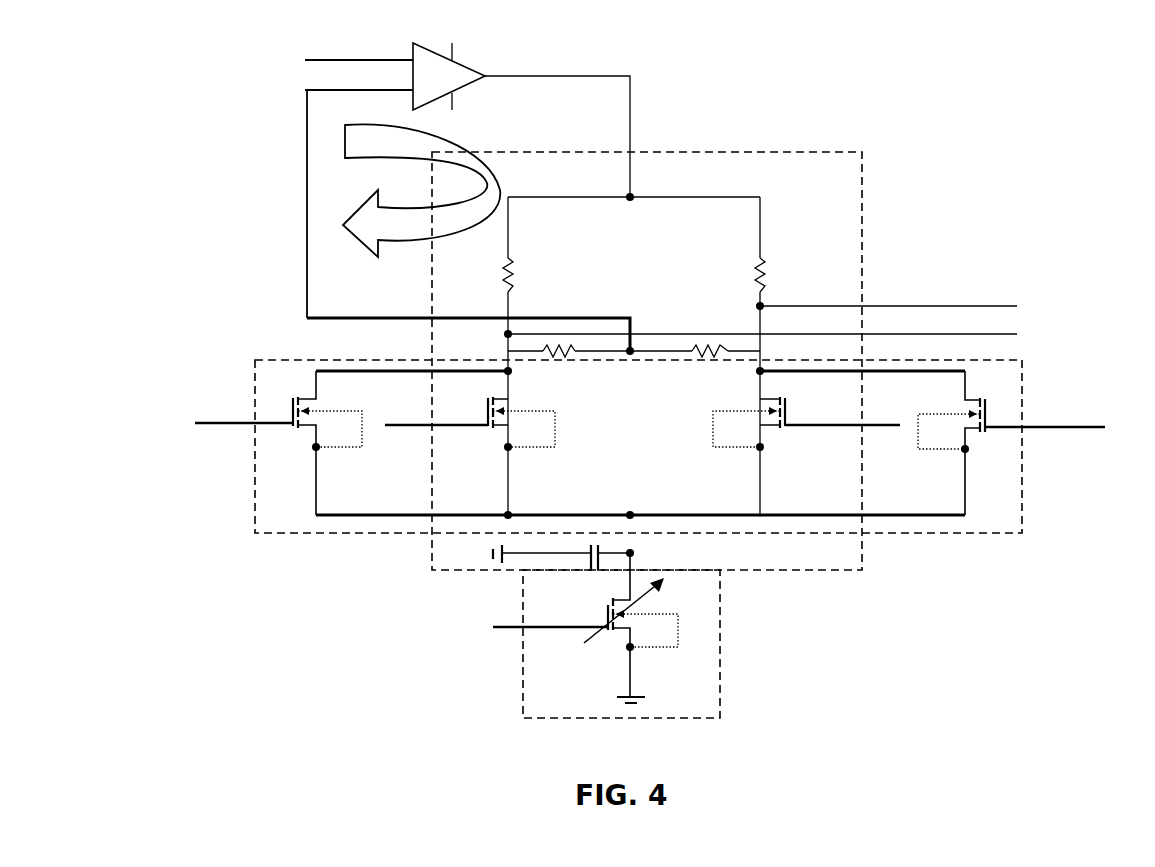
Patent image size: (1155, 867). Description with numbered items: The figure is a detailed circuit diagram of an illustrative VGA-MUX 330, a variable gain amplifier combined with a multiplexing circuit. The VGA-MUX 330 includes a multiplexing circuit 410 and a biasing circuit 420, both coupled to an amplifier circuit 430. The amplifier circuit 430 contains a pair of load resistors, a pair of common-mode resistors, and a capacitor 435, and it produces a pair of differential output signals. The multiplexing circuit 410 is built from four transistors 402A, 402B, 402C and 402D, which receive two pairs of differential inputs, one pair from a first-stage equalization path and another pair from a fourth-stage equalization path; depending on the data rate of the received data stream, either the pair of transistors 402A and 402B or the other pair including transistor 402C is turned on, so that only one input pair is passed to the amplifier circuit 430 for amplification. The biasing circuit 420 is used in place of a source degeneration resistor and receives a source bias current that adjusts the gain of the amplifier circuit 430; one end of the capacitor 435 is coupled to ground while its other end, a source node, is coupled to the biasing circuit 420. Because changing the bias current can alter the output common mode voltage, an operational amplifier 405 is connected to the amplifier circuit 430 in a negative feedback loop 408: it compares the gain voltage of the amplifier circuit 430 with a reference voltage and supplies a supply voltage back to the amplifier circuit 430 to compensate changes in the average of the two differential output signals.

The VGA-MUX 330 is at (1032, 103).
The operational amplifier 405 is at (457, 62).
The negative feedback loop 408 is at (345, 150).
The amplifier circuit 430 is at (853, 182).
The multiplexing circuit 410 is at (1015, 501).
The biasing circuit 420 is at (720, 650).
The capacitor 435 is at (587, 559).
The transistor 402A is at (300, 428).
The transistor 402B is at (975, 430).
The transistor 402C is at (496, 428).
The transistor 402D is at (777, 428).